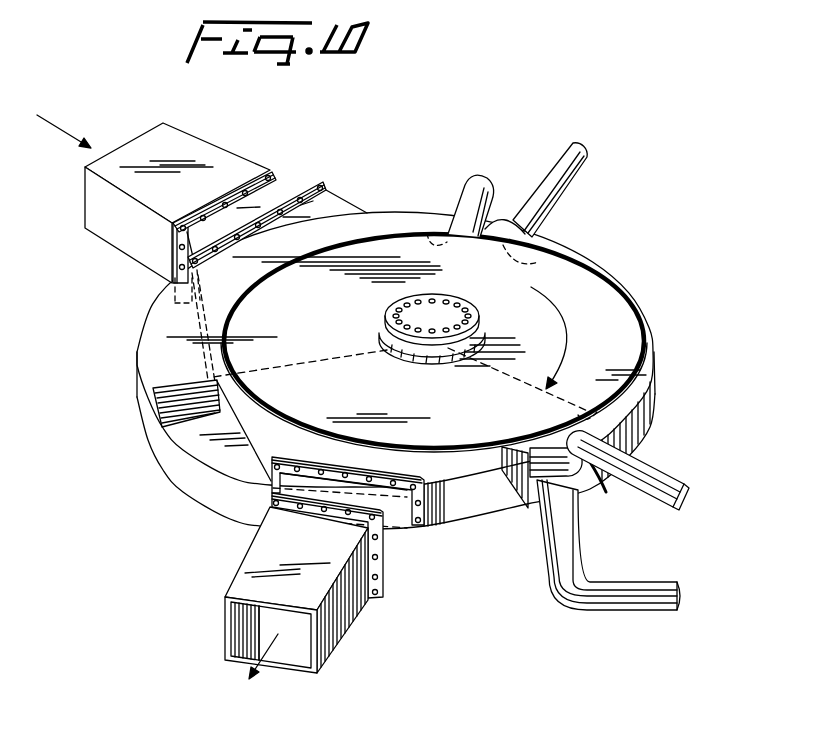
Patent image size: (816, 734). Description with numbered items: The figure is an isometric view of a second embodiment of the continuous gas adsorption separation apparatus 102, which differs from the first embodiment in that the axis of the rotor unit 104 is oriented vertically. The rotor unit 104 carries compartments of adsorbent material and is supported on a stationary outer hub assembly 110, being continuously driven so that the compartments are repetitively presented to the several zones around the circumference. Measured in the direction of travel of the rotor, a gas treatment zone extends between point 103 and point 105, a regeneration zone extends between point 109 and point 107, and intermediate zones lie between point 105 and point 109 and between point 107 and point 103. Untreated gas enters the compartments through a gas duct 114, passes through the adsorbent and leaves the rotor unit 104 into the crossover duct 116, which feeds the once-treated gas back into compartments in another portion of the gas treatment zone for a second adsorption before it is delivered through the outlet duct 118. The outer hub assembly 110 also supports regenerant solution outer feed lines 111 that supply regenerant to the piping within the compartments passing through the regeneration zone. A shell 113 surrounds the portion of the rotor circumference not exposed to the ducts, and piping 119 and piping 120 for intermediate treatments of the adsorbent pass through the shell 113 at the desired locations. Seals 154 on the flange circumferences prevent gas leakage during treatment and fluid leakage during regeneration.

The apparatus 102 is at (345, 278).
The point 103 is at (475, 345).
The rotor unit 104 is at (600, 318).
The point 105 is at (447, 330).
The point 107 is at (640, 396).
The point 109 is at (452, 320).
The outer hub assembly 110 is at (386, 313).
The regenerant solution outer feed lines 111 is at (442, 333).
The shell 113 is at (656, 333).
The gas duct 114 is at (200, 159).
The crossover duct 116 is at (147, 364).
The outlet duct 118 is at (240, 584).
The piping 119 is at (507, 188).
The piping 120 is at (620, 514).
The seals 154 is at (268, 413).